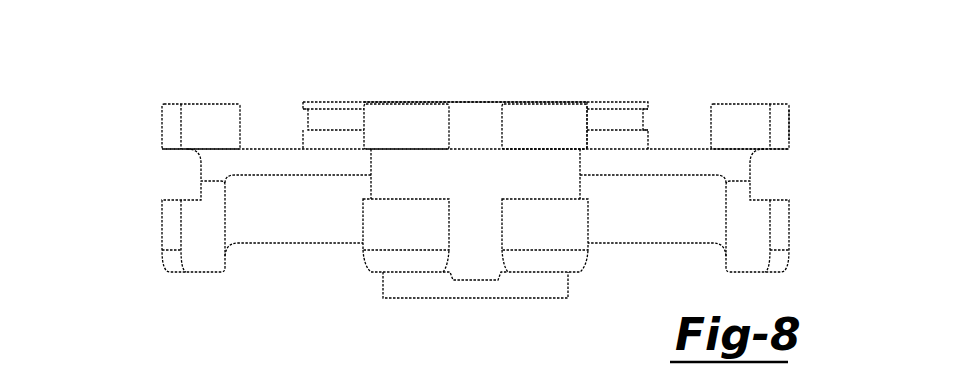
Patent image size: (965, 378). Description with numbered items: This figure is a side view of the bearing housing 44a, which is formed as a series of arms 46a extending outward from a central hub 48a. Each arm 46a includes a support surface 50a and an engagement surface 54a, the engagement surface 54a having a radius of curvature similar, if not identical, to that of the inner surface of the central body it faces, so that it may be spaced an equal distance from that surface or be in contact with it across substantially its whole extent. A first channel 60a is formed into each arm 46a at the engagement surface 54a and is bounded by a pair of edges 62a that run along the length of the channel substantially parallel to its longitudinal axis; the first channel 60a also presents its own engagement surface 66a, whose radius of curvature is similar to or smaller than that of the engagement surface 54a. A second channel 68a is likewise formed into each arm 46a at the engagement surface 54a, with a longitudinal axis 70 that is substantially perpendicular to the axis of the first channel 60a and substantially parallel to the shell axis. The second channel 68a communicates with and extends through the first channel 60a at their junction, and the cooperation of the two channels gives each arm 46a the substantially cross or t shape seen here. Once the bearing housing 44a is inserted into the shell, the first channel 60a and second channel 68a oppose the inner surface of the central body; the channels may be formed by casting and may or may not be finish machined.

The bearing housing 44a is at (148, 135).
The arm 46a is at (180, 104).
The central hub 48a is at (557, 290).
The support surface 50a is at (738, 113).
The engagement surface 54a is at (408, 126).
The first channel 60a is at (182, 188).
The edge 62a is at (415, 148).
The engagement surface 66a is at (472, 161).
The second channel 68a is at (475, 100).
The longitudinal axis 70 is at (481, 51).